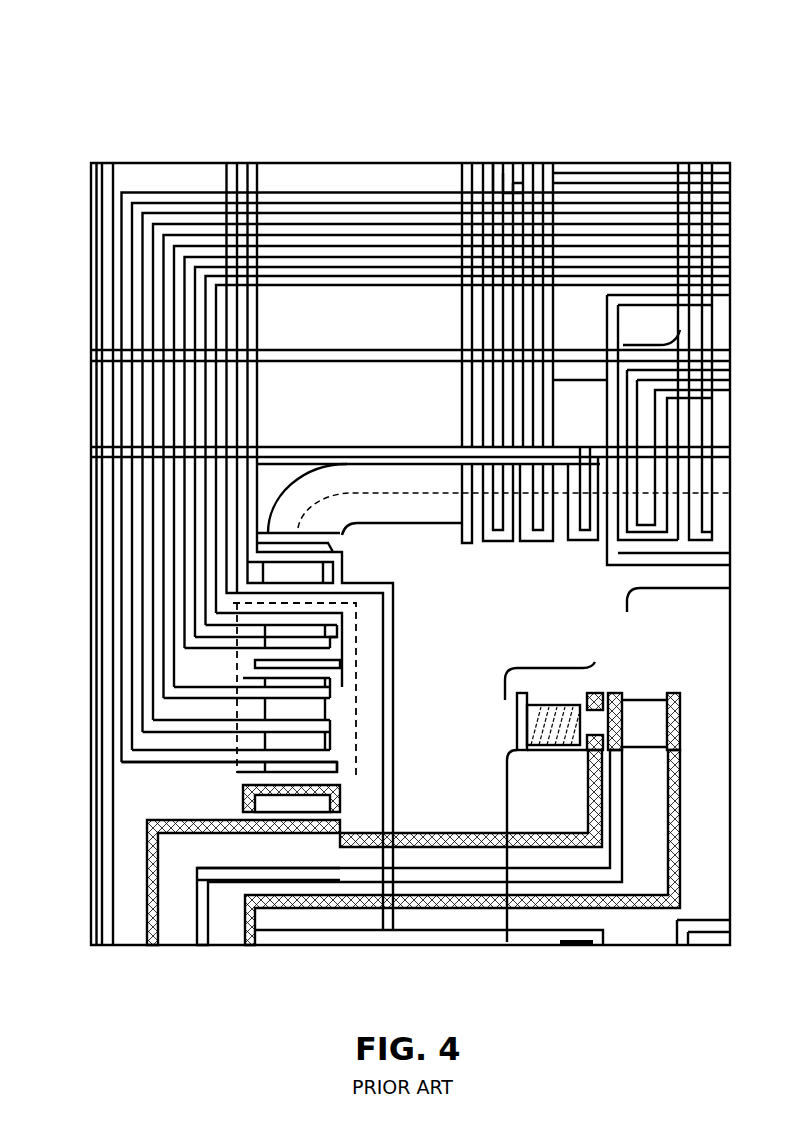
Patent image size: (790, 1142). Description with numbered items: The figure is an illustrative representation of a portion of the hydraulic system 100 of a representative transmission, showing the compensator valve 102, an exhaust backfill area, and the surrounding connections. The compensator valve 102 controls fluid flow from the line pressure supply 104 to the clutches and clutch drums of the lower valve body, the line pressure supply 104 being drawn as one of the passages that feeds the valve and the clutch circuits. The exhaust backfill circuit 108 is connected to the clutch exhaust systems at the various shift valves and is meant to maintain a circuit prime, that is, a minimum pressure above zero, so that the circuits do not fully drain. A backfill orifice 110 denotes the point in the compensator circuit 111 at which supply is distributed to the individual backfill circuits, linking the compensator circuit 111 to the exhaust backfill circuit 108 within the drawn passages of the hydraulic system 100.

The hydraulic system 100 is at (146, 104).
The compensator valve 102 is at (609, 686).
The line pressure supply 104 is at (237, 873).
The exhaust backfill circuit 108 is at (237, 767).
The backfill orifice 110 is at (290, 783).
The compensator circuit 111 is at (153, 910).